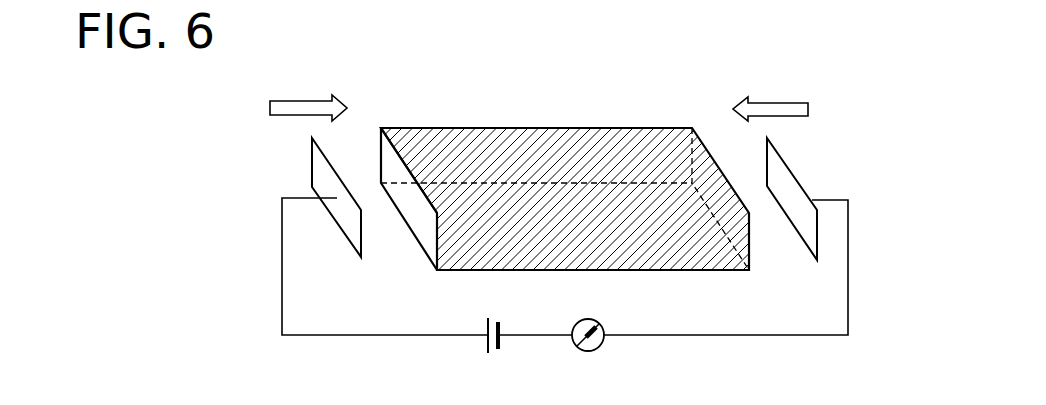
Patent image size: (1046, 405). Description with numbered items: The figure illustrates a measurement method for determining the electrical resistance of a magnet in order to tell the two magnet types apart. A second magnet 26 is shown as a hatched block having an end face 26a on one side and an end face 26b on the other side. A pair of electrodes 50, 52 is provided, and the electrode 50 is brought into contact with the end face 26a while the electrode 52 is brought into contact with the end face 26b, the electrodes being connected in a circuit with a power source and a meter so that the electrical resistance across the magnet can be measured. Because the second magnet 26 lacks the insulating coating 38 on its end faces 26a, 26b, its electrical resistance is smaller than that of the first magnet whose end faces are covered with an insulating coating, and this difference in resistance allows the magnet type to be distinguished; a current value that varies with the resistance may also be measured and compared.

The second magnet 26 is at (626, 100).
The end face 26a is at (415, 220).
The end face 26b is at (755, 233).
The insulating coating 38 is at (510, 158).
The electrode 50 is at (322, 173).
The electrode 52 is at (780, 187).